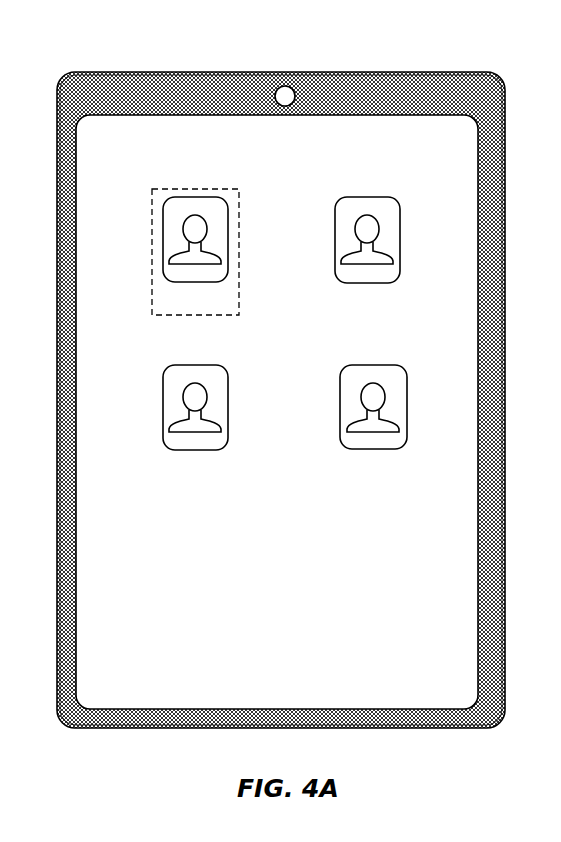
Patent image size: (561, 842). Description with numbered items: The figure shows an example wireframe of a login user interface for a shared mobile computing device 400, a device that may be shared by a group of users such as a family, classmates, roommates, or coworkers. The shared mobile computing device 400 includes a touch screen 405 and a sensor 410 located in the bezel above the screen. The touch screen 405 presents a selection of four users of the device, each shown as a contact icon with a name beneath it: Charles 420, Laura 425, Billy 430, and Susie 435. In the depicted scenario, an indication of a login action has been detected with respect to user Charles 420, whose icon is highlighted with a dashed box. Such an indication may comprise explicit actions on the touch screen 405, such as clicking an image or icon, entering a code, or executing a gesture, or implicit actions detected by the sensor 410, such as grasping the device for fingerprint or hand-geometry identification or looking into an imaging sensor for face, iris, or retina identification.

The shared mobile computing device 400 is at (281, 385).
The touch screen 405 is at (151, 112).
The sensor 410 is at (288, 87).
The Charles 420 is at (193, 197).
The Laura 425 is at (373, 197).
The Billy 430 is at (193, 365).
The Susie 435 is at (373, 365).